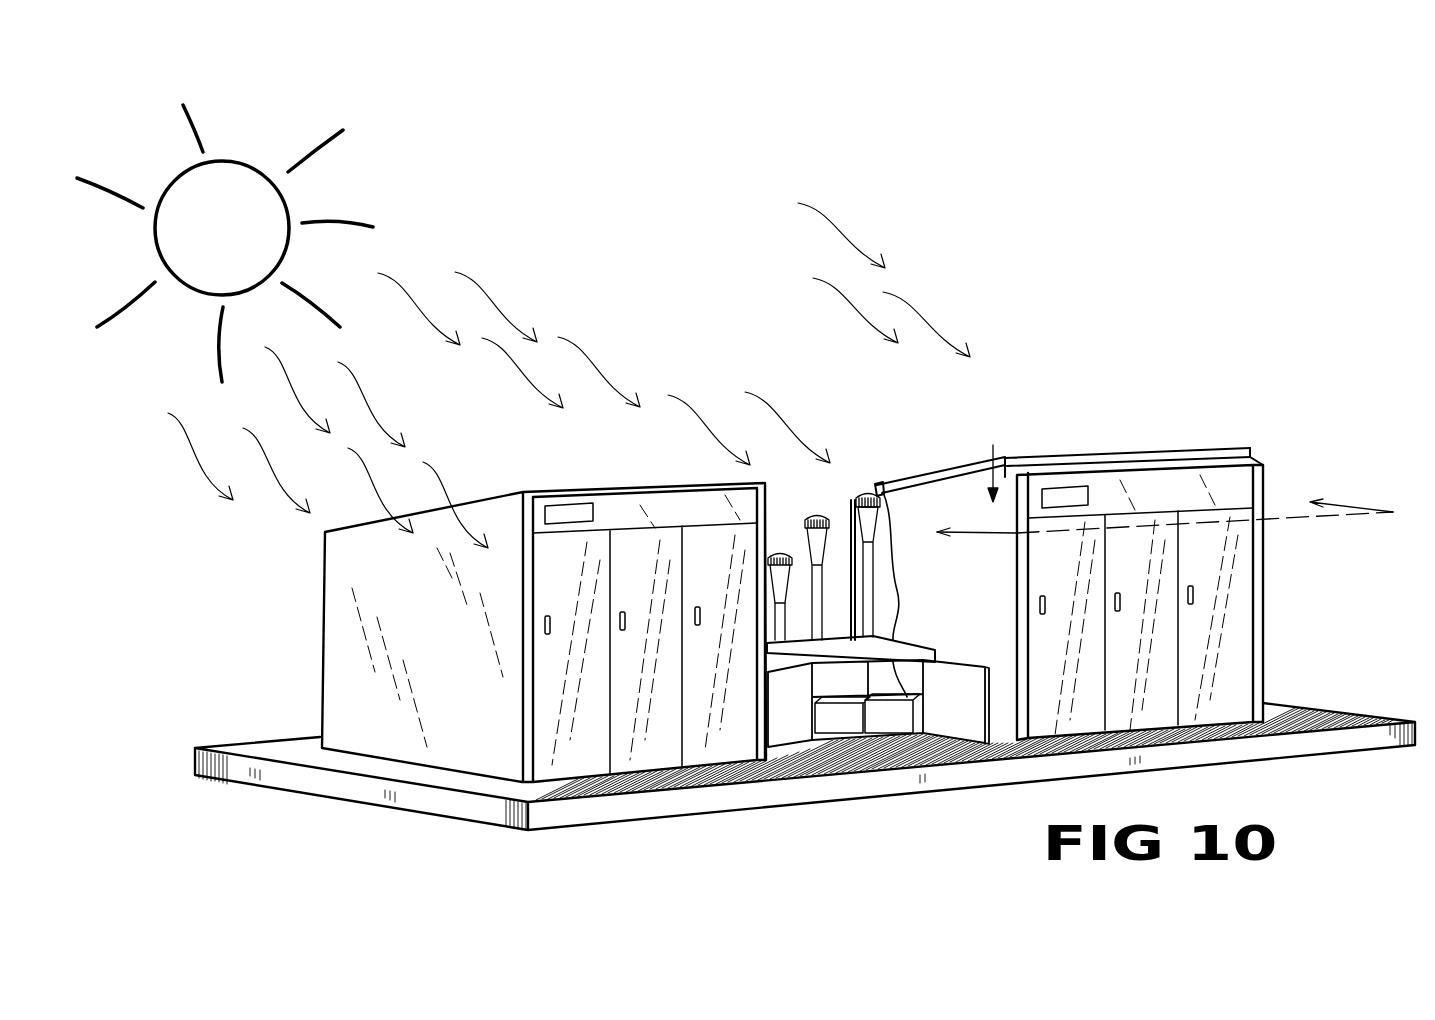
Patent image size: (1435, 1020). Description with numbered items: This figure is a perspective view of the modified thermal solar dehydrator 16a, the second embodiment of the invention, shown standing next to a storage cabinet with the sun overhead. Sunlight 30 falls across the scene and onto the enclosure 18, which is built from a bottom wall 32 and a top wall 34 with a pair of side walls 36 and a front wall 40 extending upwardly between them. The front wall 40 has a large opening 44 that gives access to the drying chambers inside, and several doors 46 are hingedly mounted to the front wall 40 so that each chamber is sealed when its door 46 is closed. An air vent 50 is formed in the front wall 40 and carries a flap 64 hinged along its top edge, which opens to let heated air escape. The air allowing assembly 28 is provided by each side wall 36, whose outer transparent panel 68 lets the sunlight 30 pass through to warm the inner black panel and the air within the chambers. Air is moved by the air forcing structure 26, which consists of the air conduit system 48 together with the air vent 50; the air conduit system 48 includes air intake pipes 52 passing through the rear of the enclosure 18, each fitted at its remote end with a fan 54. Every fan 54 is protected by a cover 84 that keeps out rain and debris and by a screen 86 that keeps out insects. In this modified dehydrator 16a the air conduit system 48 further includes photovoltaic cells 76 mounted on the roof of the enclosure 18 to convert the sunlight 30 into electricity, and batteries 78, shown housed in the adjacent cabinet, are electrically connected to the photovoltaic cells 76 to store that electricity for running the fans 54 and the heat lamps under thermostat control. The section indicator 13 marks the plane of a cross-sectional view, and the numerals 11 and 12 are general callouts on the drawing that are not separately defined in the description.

The sunlight 30 is at (592, 353).
The modified thermal solar dehydrator 16a is at (805, 580).
The enclosure 11 is at (1116, 545).
The photovoltaic cells 76 is at (953, 467).
The cover 84 is at (865, 493).
The air allowing assembly 28 is at (993, 459).
The flap 64 is at (1067, 493).
The top wall 34 is at (1178, 467).
The front wall 40 is at (1247, 480).
The section line 13 is at (1146, 515).
The screen 86 is at (742, 613).
The ventilation unit 12 is at (846, 626).
The fan 54 is at (872, 532).
The air forcing structure 26 is at (763, 615).
The air intake pipe 52 is at (778, 636).
The air conduit system 48 is at (888, 621).
The outer transparent panel 68 is at (1008, 635).
The air vent 50 is at (1063, 508).
The large opening 44 is at (1245, 578).
The enclosure 18 is at (1183, 576).
The door 46 is at (1247, 678).
The batteries 78 is at (883, 720).
The side wall 36 is at (994, 720).
The bottom wall 32 is at (1167, 725).